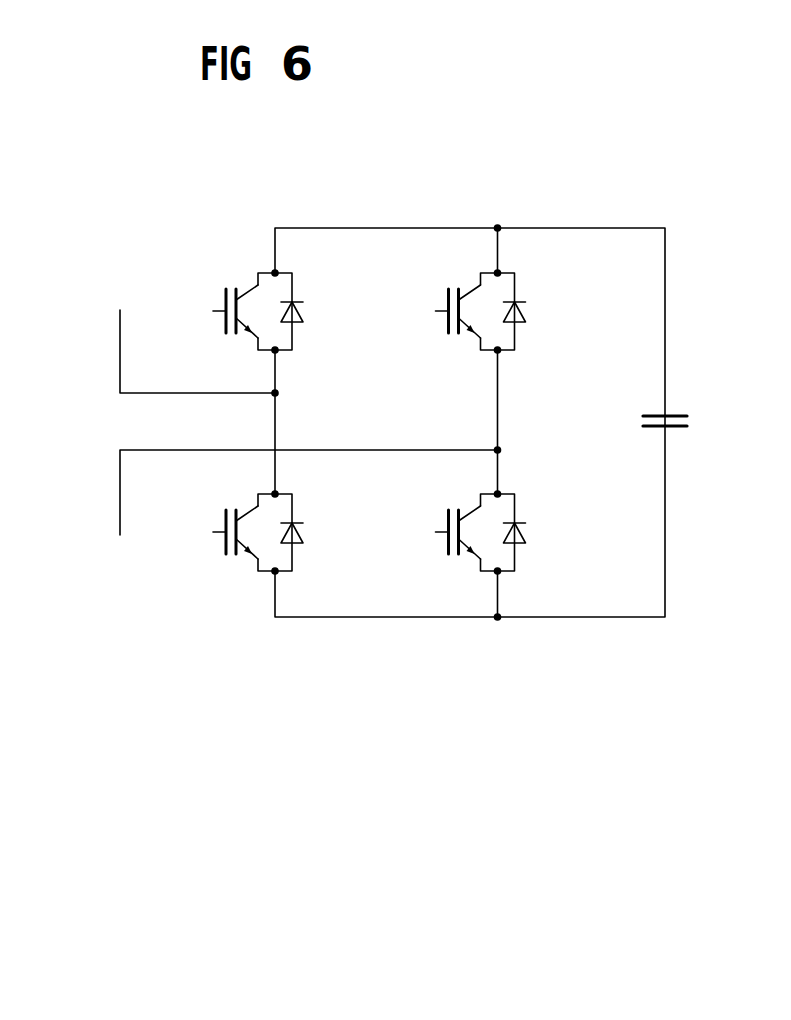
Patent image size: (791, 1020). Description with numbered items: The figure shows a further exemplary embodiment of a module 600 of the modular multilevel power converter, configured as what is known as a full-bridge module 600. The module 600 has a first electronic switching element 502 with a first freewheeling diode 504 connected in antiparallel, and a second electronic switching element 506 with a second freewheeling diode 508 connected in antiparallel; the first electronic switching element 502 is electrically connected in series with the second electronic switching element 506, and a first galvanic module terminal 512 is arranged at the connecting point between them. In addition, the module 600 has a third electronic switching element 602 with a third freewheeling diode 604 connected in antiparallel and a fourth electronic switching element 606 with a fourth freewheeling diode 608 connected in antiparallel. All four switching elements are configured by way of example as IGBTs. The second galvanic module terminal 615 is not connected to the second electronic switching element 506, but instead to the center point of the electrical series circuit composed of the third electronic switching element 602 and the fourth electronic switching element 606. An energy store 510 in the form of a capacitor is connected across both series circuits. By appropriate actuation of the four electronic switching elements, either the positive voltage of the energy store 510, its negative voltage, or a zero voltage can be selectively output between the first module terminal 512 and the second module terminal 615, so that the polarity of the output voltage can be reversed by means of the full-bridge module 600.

The module 600 is at (682, 193).
The first electronic switching element 502 is at (226, 302).
The first freewheeling diode 504 is at (303, 318).
The second electronic switching element 506 is at (226, 523).
The second freewheeling diode 508 is at (303, 539).
The third electronic switching element 602 is at (448, 302).
The third freewheeling diode 604 is at (526, 318).
The fourth electronic switching element 606 is at (448, 523).
The fourth freewheeling diode 608 is at (526, 539).
The energy store 510 is at (641, 420).
The first galvanic module terminal 512 is at (120, 350).
The second galvanic module terminal 615 is at (120, 501).